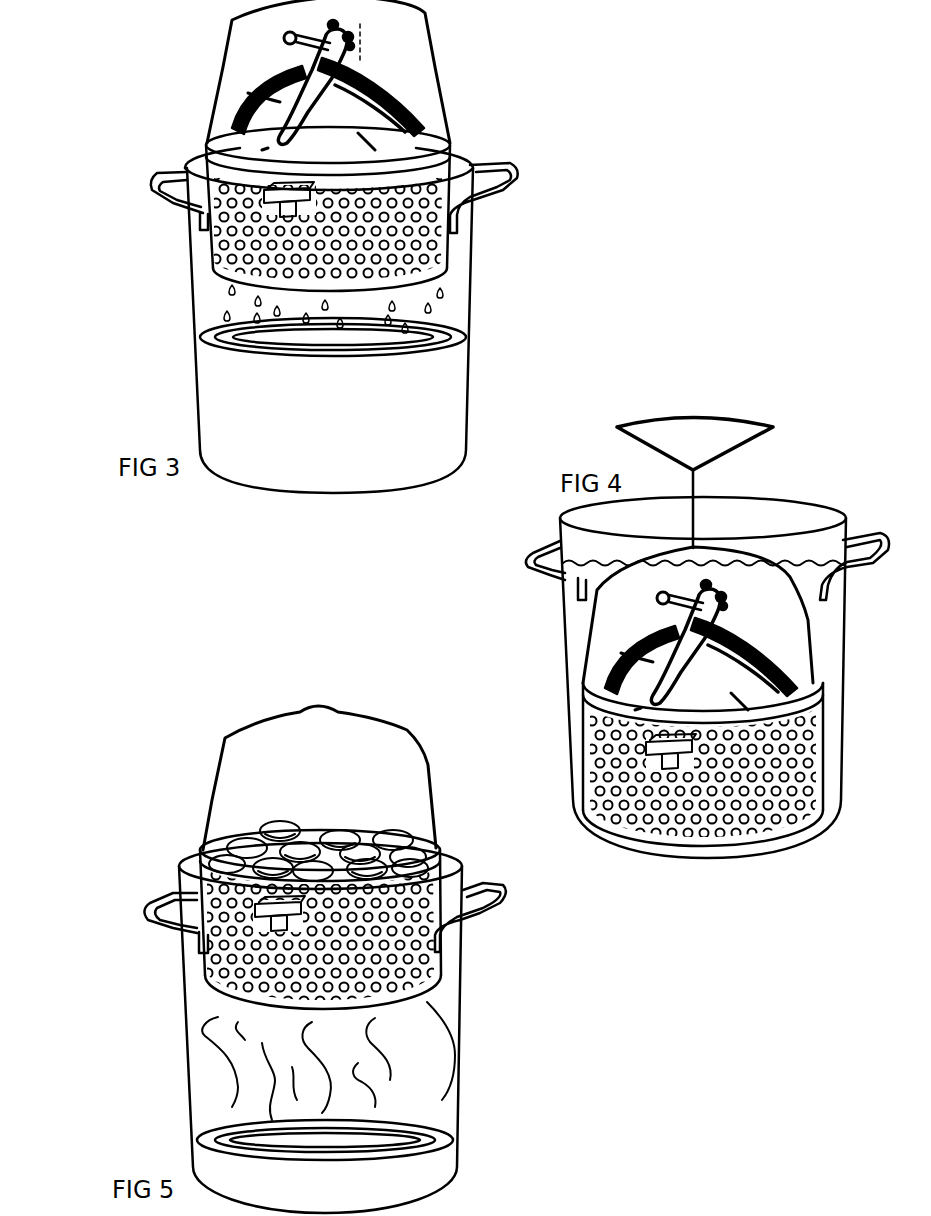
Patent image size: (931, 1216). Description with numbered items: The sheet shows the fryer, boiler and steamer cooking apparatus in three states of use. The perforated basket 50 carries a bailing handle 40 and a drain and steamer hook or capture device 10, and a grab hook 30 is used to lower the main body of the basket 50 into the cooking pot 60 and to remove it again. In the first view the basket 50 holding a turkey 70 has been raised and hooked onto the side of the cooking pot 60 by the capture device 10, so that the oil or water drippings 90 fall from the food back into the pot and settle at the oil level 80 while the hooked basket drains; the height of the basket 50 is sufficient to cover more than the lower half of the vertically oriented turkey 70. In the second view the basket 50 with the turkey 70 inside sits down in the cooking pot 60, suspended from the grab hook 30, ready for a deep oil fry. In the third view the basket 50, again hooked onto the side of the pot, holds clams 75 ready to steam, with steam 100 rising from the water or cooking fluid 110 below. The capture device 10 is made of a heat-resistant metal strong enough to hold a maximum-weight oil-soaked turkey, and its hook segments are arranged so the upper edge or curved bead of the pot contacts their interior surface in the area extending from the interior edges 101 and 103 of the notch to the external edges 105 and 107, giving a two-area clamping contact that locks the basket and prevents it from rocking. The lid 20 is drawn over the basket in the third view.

In FIG. 3, the drain and steamer hook or capture device 10 is at (206, 150).
In FIG. 4, the drain and steamer hook or capture device 10 is at (645, 757).
In FIG. 5, the drain and steamer hook or capture device 10 is at (200, 887).
In FIG. 5, the lid 20 is at (313, 713).
In FIG. 4, the grab hook 30 is at (698, 488).
In FIG. 3, the bailing handle 40 is at (440, 52).
In FIG. 4, the basket 50 is at (798, 760).
In FIG. 4, the cooking pot 60 is at (575, 655).
In FIG. 3, the turkey 70 is at (282, 88).
In FIG. 5, the clams 75 is at (278, 826).
In FIG. 3, the oil level 80 is at (410, 356).
In FIG. 4, the oil level 80 is at (560, 540).
In FIG. 3, the oil or water drippings 90 is at (432, 305).
In FIG. 5, the steam 100 is at (448, 1032).
In FIG. 3, the interior edge of hook segment 101 is at (287, 220).
In FIG. 5, the interior edge of hook segment 101 is at (272, 922).
In FIG. 3, the interior edge of hook segment 103 is at (292, 190).
In FIG. 5, the interior edge of hook segment 103 is at (282, 922).
In FIG. 3, the external edge of hook segment 105 is at (282, 222).
In FIG. 3, the external edge of hook segment 107 is at (468, 150).
In FIG. 5, the water (cooking fluid) 110 is at (455, 1137).